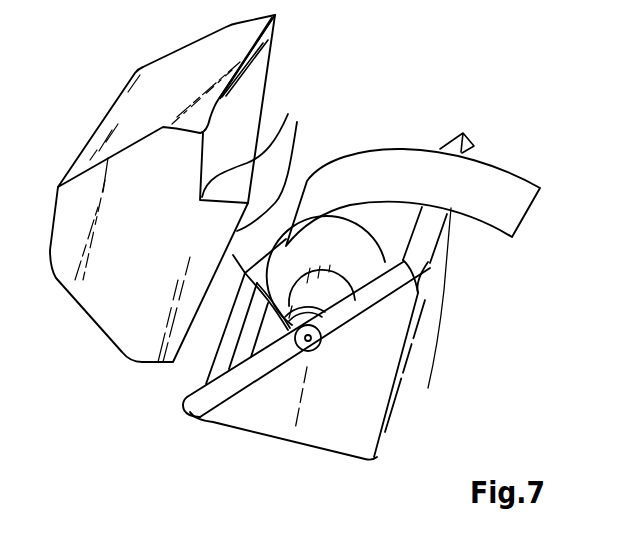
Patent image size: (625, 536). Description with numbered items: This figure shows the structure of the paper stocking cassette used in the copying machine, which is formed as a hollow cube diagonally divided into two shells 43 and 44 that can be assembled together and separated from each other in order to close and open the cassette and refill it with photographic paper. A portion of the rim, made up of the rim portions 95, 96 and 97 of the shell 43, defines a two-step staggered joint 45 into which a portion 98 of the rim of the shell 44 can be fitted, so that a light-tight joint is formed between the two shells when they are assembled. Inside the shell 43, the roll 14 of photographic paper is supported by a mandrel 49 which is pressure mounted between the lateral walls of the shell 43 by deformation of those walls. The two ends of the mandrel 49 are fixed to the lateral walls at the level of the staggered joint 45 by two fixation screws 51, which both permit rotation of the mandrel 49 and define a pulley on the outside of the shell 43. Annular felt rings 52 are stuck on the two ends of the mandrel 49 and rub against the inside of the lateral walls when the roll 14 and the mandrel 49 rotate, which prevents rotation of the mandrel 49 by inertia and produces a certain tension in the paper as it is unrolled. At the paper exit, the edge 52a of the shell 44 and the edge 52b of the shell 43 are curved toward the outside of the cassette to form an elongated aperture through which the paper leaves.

The shell 44 is at (91, 297).
The edge of the shell 44 52a is at (270, 37).
The portion of the rim of the shell 44 98 is at (258, 186).
The rim portion of the shell 43 97 is at (447, 149).
The edge of the shell 43 52b is at (427, 242).
The roll of photographic paper 14 is at (357, 263).
The mandrel 49 is at (328, 290).
The annular felt rings 52 is at (340, 310).
The fixation screws 51 is at (321, 337).
The shell 43 is at (363, 422).
The two-step staggered joint 45 is at (197, 413).
The rim portion of the shell 43 95 is at (277, 350).
The rim portion of the shell 43 96 is at (207, 364).